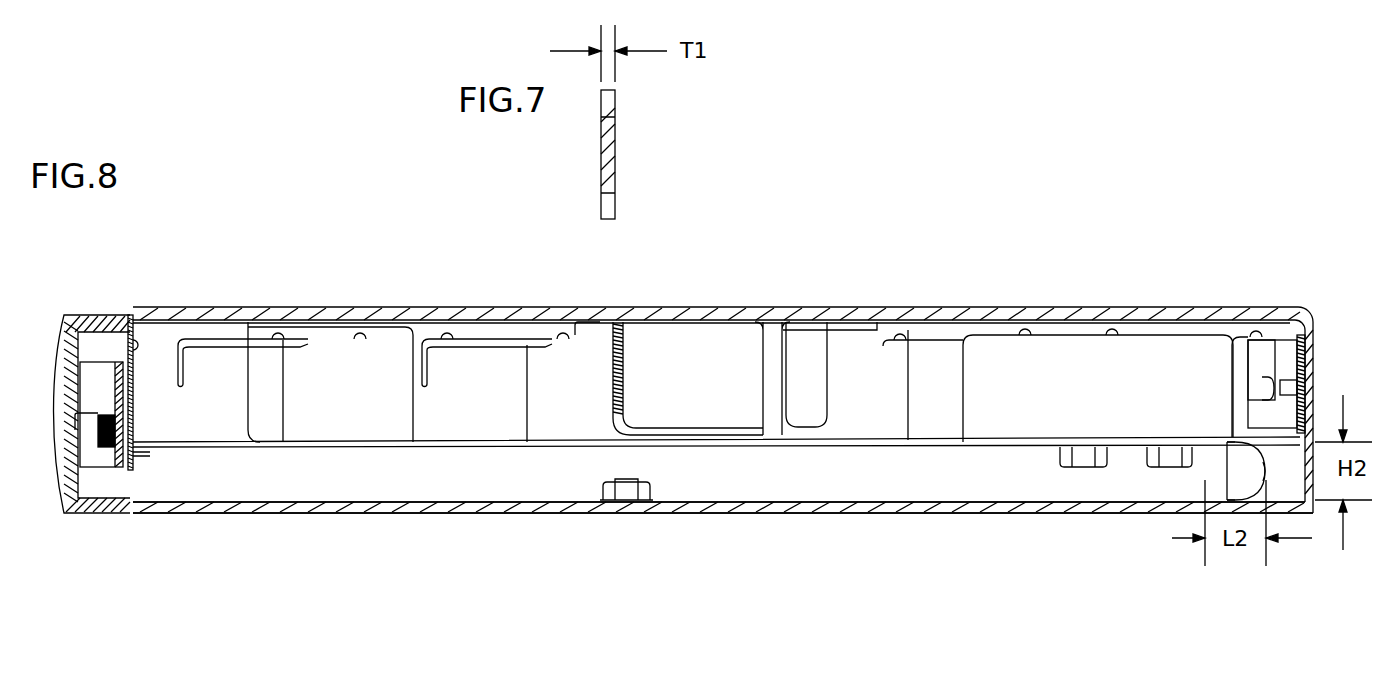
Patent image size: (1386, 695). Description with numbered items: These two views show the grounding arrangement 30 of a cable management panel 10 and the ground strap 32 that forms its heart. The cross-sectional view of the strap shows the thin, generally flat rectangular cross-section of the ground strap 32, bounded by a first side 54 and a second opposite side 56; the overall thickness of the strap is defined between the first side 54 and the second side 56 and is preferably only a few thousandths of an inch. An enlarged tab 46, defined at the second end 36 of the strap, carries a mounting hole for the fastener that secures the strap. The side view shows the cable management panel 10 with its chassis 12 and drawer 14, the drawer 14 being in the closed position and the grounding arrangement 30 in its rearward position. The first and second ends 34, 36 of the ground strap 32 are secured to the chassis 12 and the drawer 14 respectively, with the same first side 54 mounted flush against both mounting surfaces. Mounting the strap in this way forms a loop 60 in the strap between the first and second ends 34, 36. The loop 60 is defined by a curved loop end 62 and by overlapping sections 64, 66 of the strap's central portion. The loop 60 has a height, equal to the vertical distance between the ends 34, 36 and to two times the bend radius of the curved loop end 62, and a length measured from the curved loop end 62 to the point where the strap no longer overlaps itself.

In FIG. 8, the cable management panel 10 is at (182, 288).
In FIG. 8, the chassis 12 is at (1120, 305).
In FIG. 8, the drawer 14 is at (303, 448).
In FIG. 8, the grounding arrangement 30 is at (881, 495).
In FIG. 8, the ground strap 32 is at (790, 500).
In FIG. 8, the first end 34 is at (652, 505).
In FIG. 8, the second end 36 is at (1135, 440).
In FIG. 7, the enlarged tab 46 is at (601, 215).
In FIG. 7, the first side 54 is at (615, 153).
In FIG. 8, the first side 54 is at (688, 503).
In FIG. 7, the second side 56 is at (601, 152).
In FIG. 8, the second side 56 is at (933, 500).
In FIG. 8, the loop 60 is at (1266, 446).
In FIG. 8, the curved loop end 62 is at (1263, 467).
In FIG. 8, the overlapping section 64 is at (1233, 444).
In FIG. 8, the overlapping section 66 is at (1224, 499).